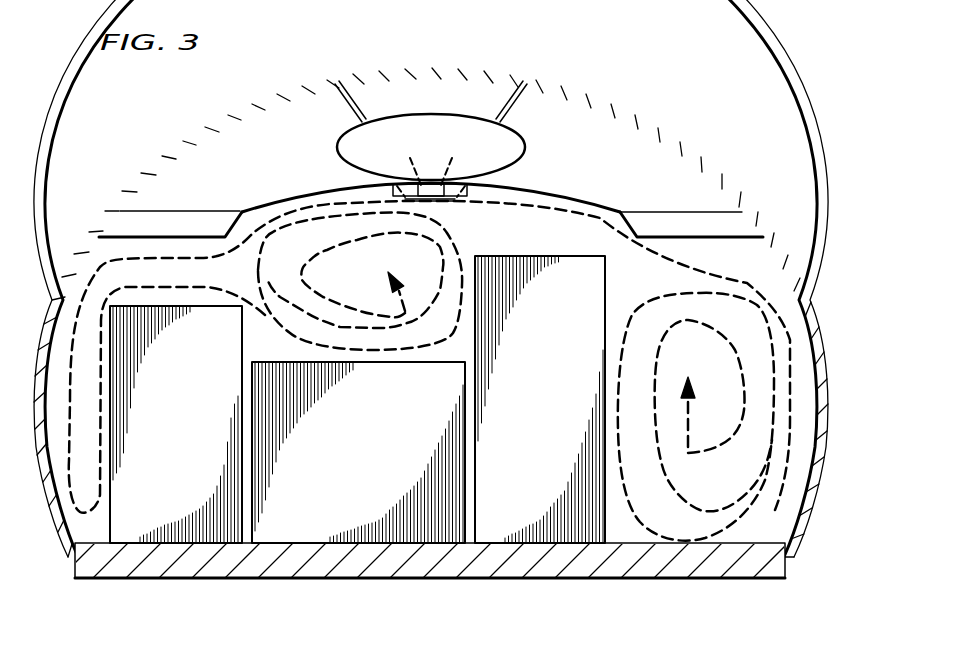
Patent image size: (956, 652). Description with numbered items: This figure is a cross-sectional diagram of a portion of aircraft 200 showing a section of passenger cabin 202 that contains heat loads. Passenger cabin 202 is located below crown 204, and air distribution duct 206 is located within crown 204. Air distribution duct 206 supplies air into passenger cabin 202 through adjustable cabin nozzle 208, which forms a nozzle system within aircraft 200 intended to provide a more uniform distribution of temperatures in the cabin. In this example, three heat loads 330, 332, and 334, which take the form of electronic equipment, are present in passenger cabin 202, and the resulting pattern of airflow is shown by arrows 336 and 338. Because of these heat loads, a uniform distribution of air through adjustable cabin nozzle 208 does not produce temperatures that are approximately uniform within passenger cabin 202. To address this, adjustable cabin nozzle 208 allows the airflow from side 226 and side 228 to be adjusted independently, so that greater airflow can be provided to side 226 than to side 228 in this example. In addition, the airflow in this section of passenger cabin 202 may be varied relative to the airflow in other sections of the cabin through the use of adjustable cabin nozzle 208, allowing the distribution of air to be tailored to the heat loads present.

The aircraft 200 is at (320, 79).
The passenger cabin 202 is at (780, 508).
The crown 204 is at (484, 96).
The air distribution duct 206 is at (340, 144).
The adjustable cabin nozzle 208 is at (446, 203).
The side 226 is at (259, 208).
The side 228 is at (604, 212).
The heat load 330 is at (193, 441).
The heat load 332 is at (373, 466).
The heat load 334 is at (558, 414).
The arrows 336 is at (100, 265).
The arrows 338 is at (750, 286).